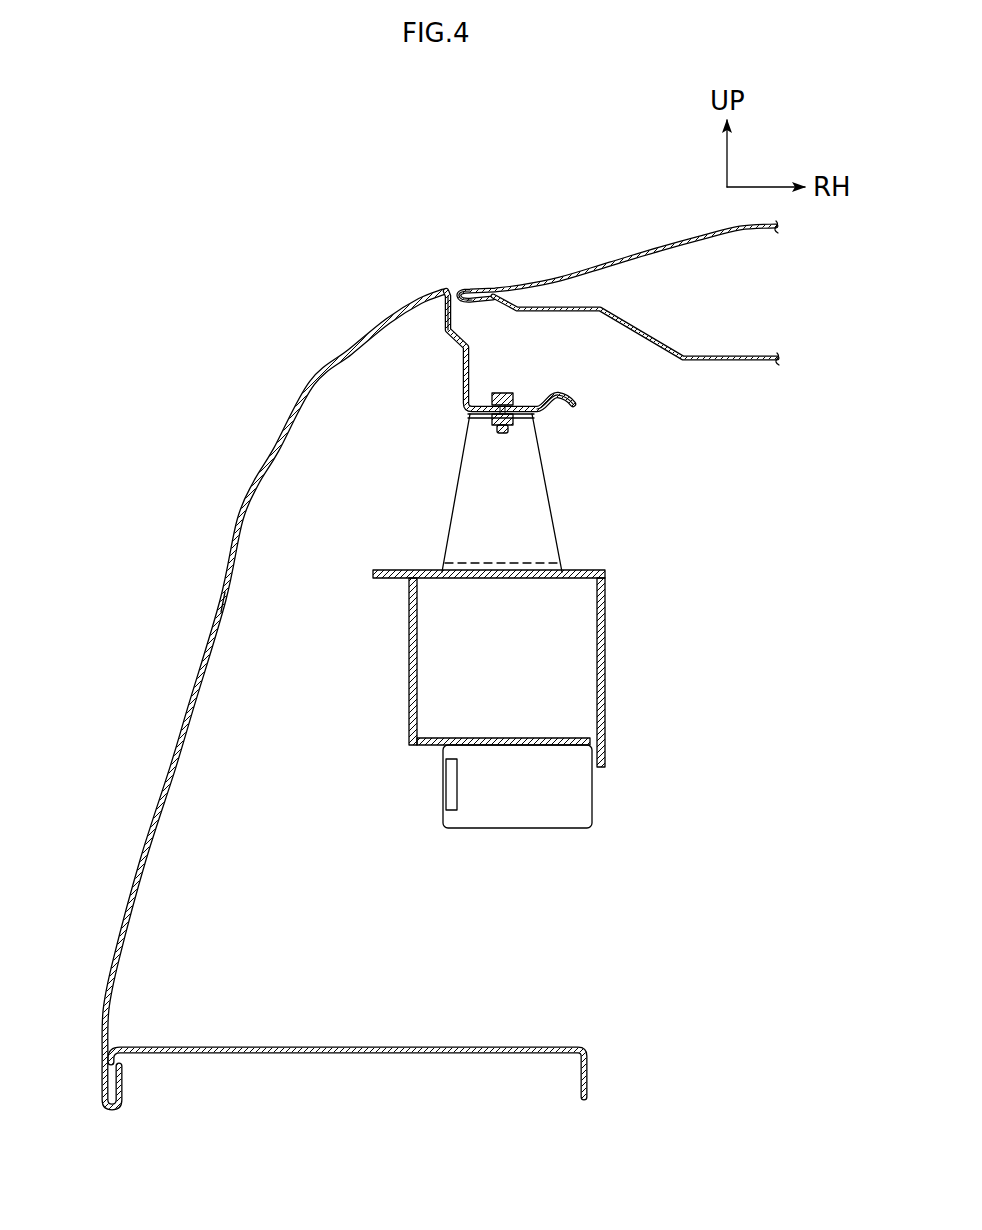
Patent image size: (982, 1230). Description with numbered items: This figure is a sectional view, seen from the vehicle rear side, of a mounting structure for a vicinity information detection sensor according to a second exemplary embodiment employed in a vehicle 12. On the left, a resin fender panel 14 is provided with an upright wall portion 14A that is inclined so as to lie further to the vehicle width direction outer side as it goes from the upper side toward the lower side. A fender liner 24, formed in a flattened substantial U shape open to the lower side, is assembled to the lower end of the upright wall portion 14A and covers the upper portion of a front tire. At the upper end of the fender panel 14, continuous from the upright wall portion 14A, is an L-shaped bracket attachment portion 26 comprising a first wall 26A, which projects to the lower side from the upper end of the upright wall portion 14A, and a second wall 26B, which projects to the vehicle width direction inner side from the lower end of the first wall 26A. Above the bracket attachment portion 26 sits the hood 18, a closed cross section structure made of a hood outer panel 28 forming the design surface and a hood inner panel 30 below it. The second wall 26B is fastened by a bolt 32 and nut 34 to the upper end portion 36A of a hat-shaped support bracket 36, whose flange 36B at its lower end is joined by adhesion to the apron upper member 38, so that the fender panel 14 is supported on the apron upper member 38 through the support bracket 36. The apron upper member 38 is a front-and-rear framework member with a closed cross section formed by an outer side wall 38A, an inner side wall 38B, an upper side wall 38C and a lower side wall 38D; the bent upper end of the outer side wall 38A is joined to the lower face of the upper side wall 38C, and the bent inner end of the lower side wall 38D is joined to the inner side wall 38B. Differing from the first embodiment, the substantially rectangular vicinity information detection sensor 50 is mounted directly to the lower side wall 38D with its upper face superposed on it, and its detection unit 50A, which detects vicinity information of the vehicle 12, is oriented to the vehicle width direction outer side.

The vehicle 12 is at (344, 628).
The fender panel 14 is at (238, 520).
The upright wall portion 14A is at (218, 600).
The hood 18 is at (619, 284).
The fender liner 24 is at (380, 1046).
The bracket attachment portion 26 is at (485, 350).
The first wall 26A is at (445, 328).
The second wall 26B is at (535, 404).
The hood outer panel 28 is at (518, 277).
The hood inner panel 30 is at (720, 365).
The bolt 32 is at (503, 392).
The nut 34 is at (518, 426).
The support bracket 36 is at (507, 493).
The upper flange of funnel-shaped member 36A is at (483, 421).
The flange 36B is at (480, 562).
The apron upper member 38 is at (544, 706).
The outer side wall 38A is at (408, 652).
The inner side wall 38B is at (605, 640).
The upper side wall 38C is at (520, 578).
The lower side wall 38D is at (543, 747).
The vicinity information detection sensor 50 is at (457, 848).
The detection unit 50A is at (443, 786).